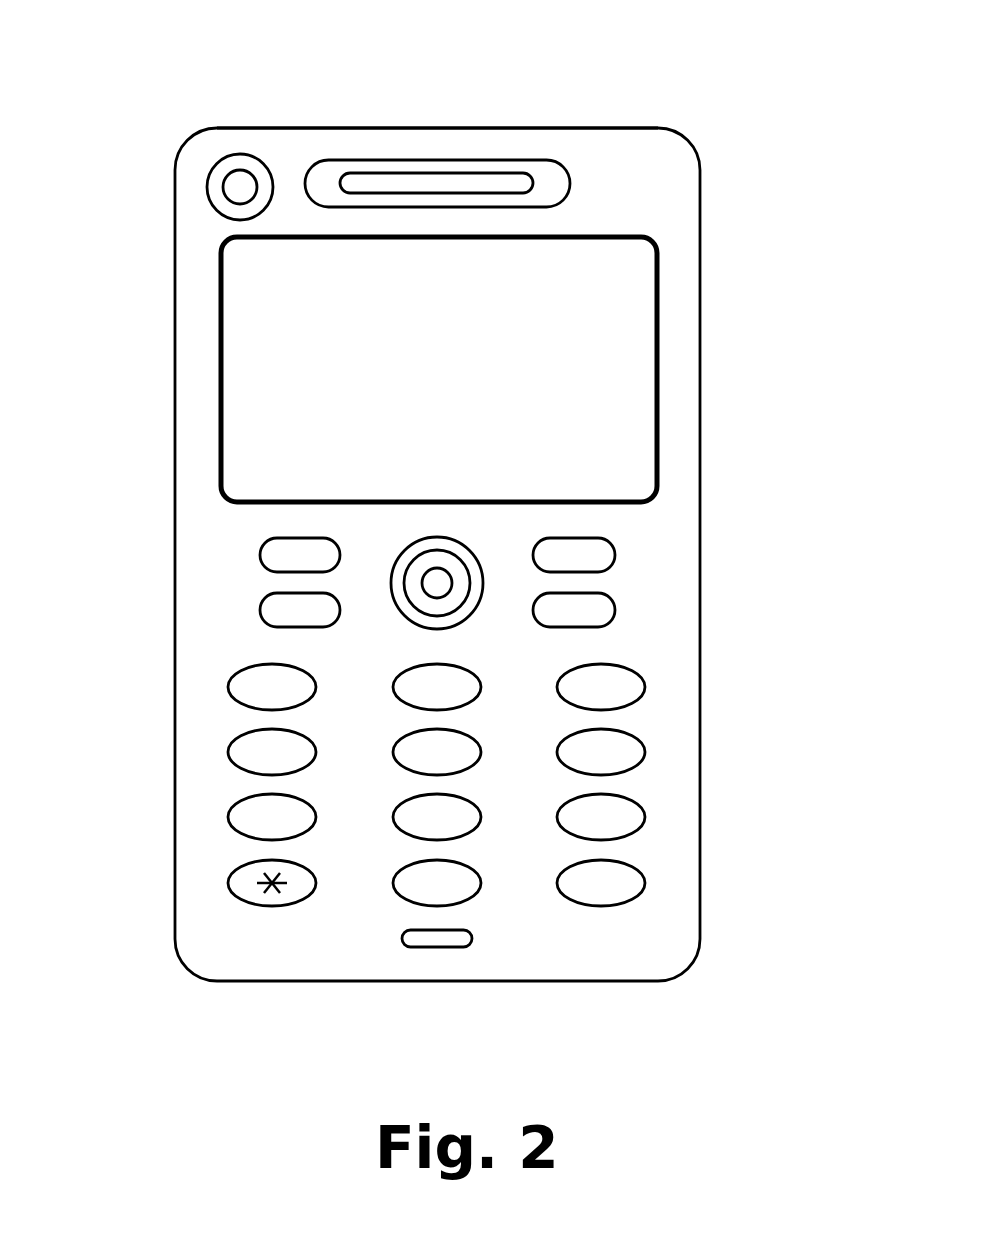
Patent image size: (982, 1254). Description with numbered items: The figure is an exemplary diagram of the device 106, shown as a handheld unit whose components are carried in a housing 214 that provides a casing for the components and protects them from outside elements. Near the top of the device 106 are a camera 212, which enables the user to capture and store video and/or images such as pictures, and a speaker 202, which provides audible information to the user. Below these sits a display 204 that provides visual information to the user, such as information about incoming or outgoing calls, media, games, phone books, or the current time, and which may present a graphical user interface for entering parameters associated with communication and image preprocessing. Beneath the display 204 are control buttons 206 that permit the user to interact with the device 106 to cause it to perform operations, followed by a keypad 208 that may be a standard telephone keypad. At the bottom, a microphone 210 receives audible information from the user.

The device 106 is at (437, 128).
The speaker 202 is at (523, 160).
The display 204 is at (657, 370).
The control buttons 206 is at (574, 586).
The keypad 208 is at (566, 786).
The microphone 210 is at (447, 947).
The camera 212 is at (207, 187).
The housing 214 is at (175, 742).